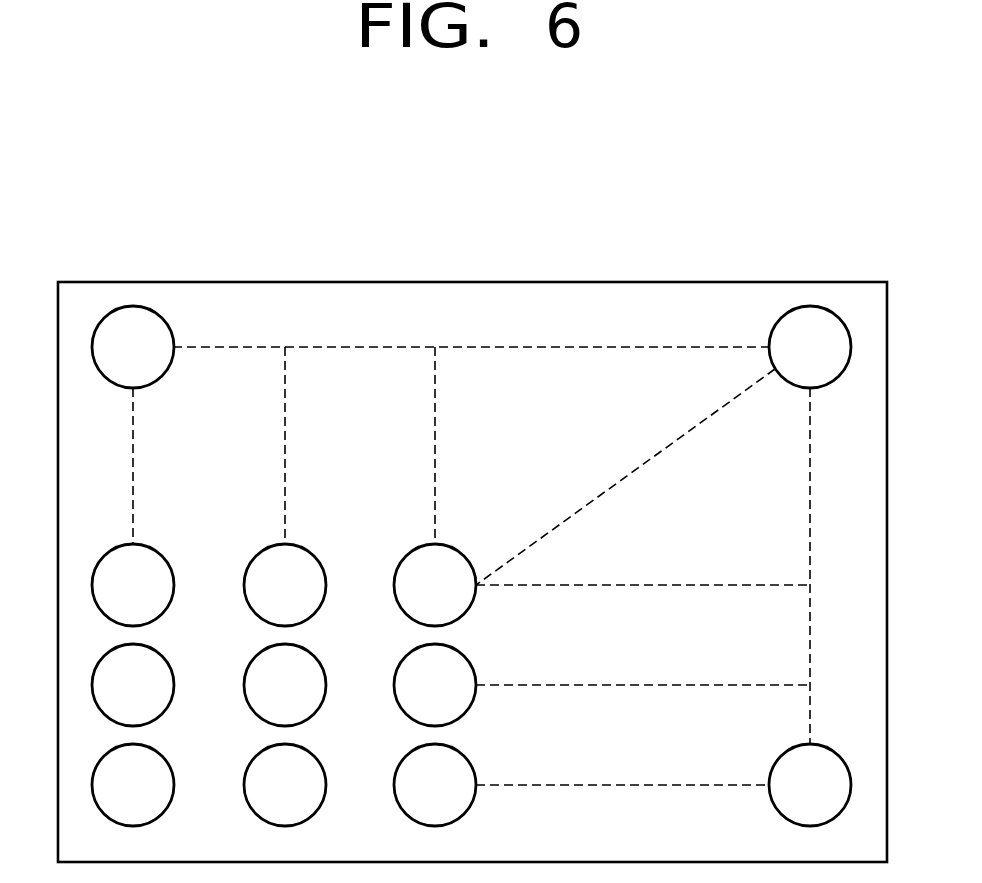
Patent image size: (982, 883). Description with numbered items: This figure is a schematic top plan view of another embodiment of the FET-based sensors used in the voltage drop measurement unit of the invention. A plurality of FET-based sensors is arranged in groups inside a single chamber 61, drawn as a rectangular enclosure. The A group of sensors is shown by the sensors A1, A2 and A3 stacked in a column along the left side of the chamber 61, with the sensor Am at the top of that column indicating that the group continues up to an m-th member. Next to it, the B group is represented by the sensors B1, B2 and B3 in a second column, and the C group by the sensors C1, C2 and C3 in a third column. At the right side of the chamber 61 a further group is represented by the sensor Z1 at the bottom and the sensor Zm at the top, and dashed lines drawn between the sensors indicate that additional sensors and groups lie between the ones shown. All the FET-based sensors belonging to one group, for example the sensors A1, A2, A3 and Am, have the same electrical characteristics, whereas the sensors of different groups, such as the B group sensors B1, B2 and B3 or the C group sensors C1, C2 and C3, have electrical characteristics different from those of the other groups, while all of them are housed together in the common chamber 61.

The chamber 61 is at (573, 282).
The FET-based sensor of the A group Am is at (133, 347).
The FET-based sensor of the Z group Zm is at (810, 347).
The FET-based sensor of the A group A3 is at (133, 585).
The FET-based sensor of the B group B3 is at (285, 585).
The FET-based sensor of the C group C3 is at (435, 585).
The FET-based sensor of the A group A2 is at (133, 685).
The FET-based sensor of the B group B2 is at (285, 685).
The FET-based sensor of the C group C2 is at (435, 685).
The FET-based sensor of the A group A1 is at (133, 785).
The FET-based sensor of the B group B1 is at (285, 785).
The FET-based sensor of the C group C1 is at (435, 785).
The FET-based sensor of the Z group Z1 is at (810, 785).